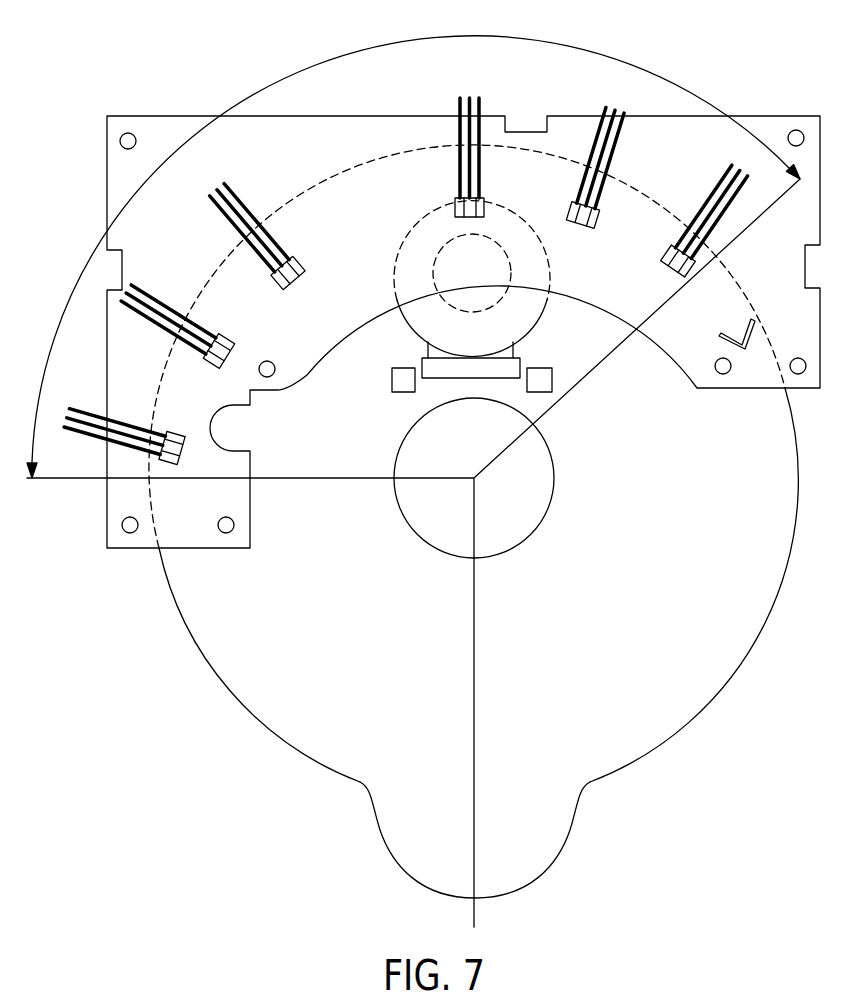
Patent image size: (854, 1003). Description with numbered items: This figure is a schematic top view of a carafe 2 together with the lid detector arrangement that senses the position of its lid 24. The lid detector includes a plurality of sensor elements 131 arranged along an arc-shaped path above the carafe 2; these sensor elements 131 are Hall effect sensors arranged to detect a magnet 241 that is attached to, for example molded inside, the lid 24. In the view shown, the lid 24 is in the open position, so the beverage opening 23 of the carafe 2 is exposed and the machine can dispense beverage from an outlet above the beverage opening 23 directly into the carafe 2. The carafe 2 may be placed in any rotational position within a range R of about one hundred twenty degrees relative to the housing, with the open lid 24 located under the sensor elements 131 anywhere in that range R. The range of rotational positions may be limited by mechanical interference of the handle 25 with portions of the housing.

The carafe 2 is at (670, 717).
The beverage opening 23 is at (535, 467).
The lid 24 is at (538, 316).
The magnet 241 is at (453, 273).
The handle 25 is at (458, 884).
The sensor elements 131 is at (290, 284).
The range R is at (333, 58).